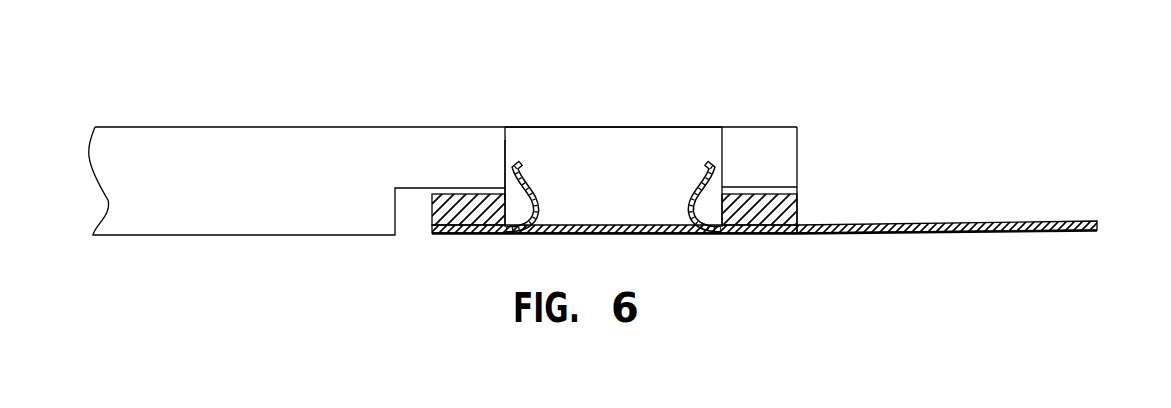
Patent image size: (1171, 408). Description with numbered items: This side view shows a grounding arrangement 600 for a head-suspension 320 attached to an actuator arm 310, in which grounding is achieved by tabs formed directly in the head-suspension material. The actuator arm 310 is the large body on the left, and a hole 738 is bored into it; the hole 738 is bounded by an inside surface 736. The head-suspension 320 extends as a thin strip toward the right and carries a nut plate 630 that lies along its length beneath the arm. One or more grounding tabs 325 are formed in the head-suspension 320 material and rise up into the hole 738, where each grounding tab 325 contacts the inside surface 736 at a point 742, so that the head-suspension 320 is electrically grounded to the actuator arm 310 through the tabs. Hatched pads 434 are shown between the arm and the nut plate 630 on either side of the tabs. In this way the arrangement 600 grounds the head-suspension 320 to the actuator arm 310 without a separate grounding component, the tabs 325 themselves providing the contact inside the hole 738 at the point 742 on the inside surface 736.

The connector assembly 600 is at (926, 111).
The actuator arm 310 is at (318, 189).
The head-suspension 320 is at (1026, 222).
The grounding tab 325 is at (538, 200).
The support pad 434 is at (452, 192).
The nut plate 630 is at (432, 213).
The inside surface 736 is at (507, 145).
The hole 738 is at (624, 133).
The point 742 is at (507, 172).